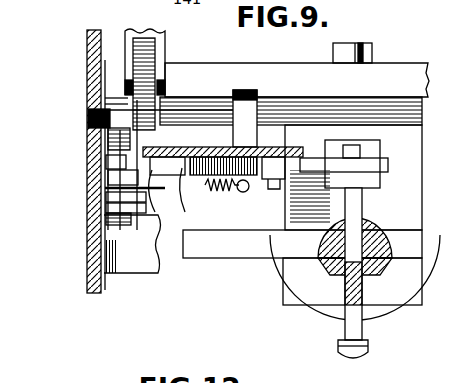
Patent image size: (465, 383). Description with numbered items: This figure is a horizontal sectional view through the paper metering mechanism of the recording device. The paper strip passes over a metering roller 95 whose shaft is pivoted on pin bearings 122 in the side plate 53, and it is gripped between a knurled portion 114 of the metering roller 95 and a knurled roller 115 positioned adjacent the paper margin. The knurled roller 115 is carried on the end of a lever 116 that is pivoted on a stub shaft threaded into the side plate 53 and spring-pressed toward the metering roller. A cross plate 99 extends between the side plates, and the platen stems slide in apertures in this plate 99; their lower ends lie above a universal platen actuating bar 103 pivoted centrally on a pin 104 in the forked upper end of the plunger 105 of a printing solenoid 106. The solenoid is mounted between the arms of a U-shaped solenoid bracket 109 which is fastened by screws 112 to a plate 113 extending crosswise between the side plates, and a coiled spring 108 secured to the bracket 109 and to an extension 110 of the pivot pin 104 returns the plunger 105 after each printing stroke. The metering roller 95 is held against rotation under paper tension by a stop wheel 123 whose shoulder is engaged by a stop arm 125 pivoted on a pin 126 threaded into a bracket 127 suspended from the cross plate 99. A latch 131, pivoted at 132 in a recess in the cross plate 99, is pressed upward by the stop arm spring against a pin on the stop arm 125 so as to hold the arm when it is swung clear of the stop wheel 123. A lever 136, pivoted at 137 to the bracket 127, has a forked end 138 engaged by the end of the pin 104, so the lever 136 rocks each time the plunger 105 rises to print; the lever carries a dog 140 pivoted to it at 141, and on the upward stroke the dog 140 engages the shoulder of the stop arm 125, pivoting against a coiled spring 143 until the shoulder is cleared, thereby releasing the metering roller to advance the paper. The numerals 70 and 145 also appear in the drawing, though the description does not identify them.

The side plate 53 is at (105, 198).
The frame 70 is at (459, 232).
The metering roller 95 is at (207, 117).
The plate 99 is at (128, 263).
The universal platen actuating bar 103 is at (205, 250).
The pin 104 is at (342, 260).
The plunger 105 is at (364, 226).
The printing solenoid 106 is at (384, 320).
The coiled spring 108 is at (369, 352).
The solenoid bracket 109 is at (405, 184).
The extension 110 is at (344, 333).
The screws 112 is at (349, 47).
The plate 113 is at (397, 72).
The knurled portion 114 is at (127, 133).
The knurled roller 115 is at (152, 62).
The lever 116 is at (131, 65).
The pin bearing 122 is at (88, 120).
The stop wheel 123 is at (128, 110).
The stop arm 125 is at (118, 170).
The pin 126 is at (128, 165).
The bracket 127 is at (263, 112).
The latch 131 is at (110, 207).
The pivot 132 is at (110, 213).
The lever 136 is at (233, 163).
The pivot 137 is at (268, 175).
The forked end 138 is at (380, 161).
The dog 140 is at (185, 212).
The pivot 141 is at (155, 212).
The coiled spring 143 is at (218, 190).
The hatched bar 145 is at (223, 144).